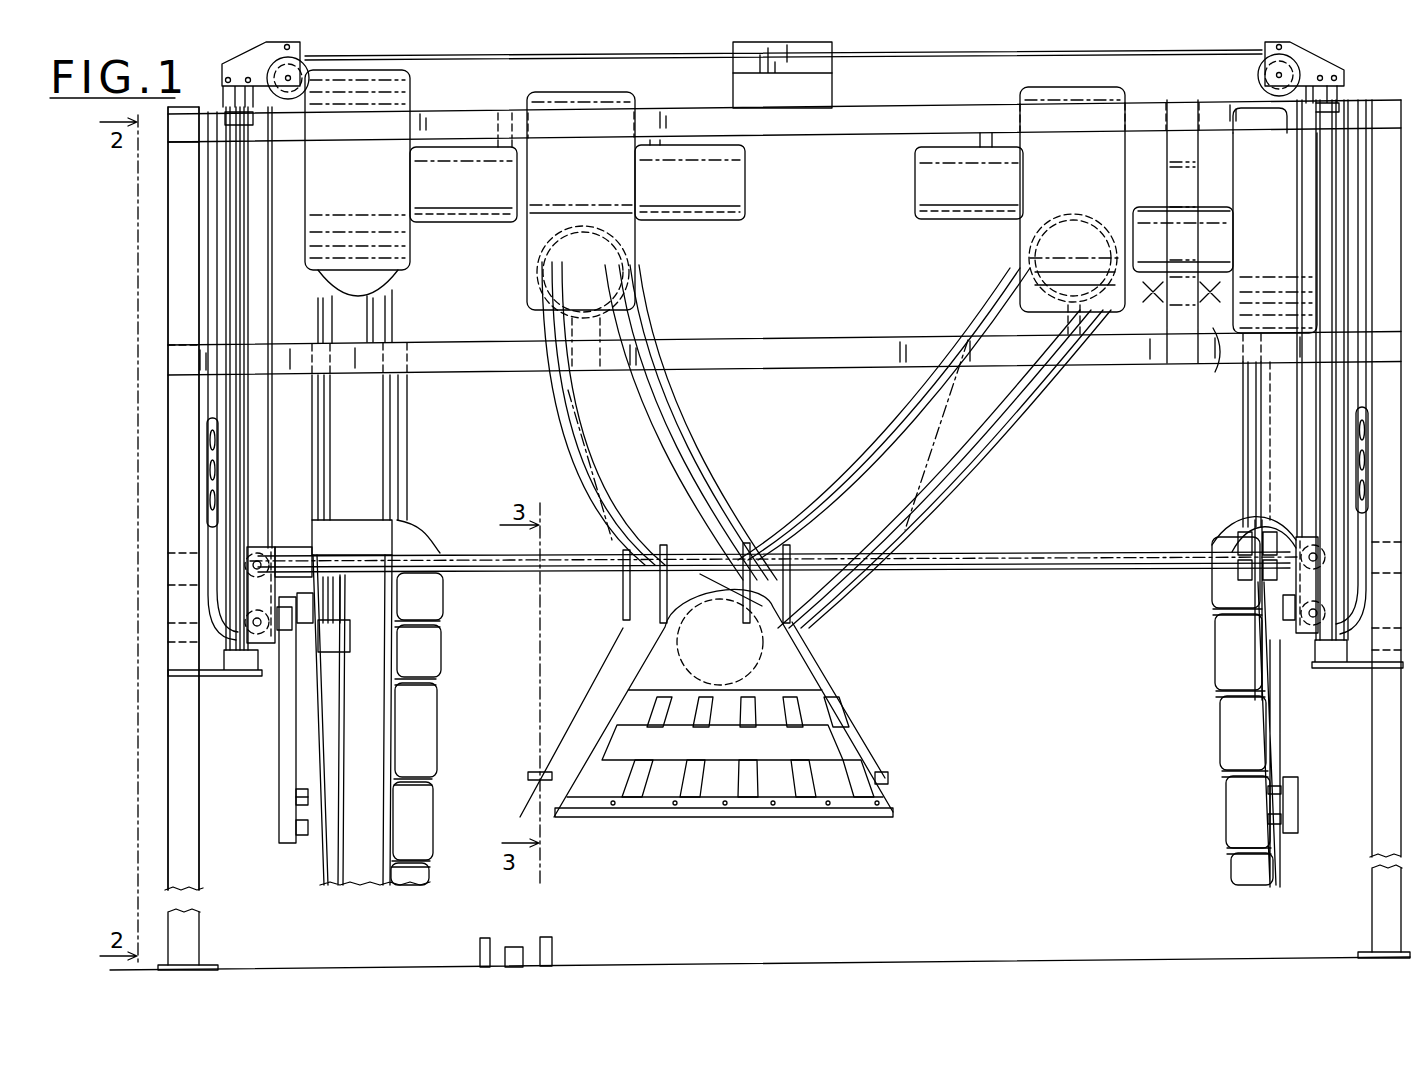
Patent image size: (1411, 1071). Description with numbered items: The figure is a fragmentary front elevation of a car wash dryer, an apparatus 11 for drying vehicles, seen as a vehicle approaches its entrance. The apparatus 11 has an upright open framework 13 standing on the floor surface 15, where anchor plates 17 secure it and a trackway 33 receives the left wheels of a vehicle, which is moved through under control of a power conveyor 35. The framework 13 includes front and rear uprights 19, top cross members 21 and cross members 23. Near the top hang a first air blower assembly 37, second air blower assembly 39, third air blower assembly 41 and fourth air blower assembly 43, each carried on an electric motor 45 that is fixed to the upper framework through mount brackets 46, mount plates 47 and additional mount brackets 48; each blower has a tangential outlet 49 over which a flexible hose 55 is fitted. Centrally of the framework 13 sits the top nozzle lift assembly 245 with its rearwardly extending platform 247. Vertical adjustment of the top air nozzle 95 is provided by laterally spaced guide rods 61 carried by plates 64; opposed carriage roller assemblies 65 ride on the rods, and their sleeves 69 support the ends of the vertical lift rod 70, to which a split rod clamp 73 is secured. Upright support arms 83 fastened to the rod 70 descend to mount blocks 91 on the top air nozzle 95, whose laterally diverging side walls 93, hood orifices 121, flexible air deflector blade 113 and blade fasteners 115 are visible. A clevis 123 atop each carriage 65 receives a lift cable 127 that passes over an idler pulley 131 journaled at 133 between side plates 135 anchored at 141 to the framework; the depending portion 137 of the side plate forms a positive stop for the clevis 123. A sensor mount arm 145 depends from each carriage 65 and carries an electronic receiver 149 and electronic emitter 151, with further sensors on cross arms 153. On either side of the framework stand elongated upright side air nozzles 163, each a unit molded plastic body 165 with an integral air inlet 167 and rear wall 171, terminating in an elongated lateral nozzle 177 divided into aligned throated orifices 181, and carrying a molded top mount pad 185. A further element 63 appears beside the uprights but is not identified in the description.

The apparatus for drying vehicles 11 is at (145, 404).
The upright open framework 13 is at (210, 839).
The floor surface 15 is at (347, 968).
The anchor plates 17 is at (205, 965).
The front and rear uprights 19 is at (193, 862).
The top cross members 21 is at (858, 124).
The cross members 23 is at (838, 334).
The trackway 33 is at (553, 948).
The power conveyor 35 is at (514, 945).
The first air blower assembly 37 is at (397, 257).
The second air blower assembly 39 is at (525, 297).
The third air blower assembly 41 is at (1016, 257).
The fourth air blower assembly 43 is at (1233, 178).
The electric motors 45 is at (478, 217).
The mount brackets 46 is at (545, 325).
The mount plates 47 is at (487, 143).
The additional mount brackets 48 is at (1193, 251).
The tangential outlet 49 is at (622, 245).
The flexible hoses 55 is at (567, 440).
The guide rods 61 is at (237, 452).
The guide tube 63 is at (253, 120).
The plates 64 is at (232, 672).
The carriage roller assemblies 65 is at (272, 558).
The sleeves 69 is at (1290, 585).
The vertical lift rod 70 is at (1095, 570).
The split rod clamp 73 is at (1242, 575).
The upright support arms 83 is at (640, 552).
The mount blocks 91 is at (762, 606).
The laterally diverging side walls 93 is at (827, 683).
The top air nozzle 95 is at (828, 670).
The flexible air deflector blade 113 is at (890, 817).
The fasteners 115 is at (675, 806).
The orifices 121 is at (522, 772).
The clevis 123 is at (1262, 520).
The lift cable 127 is at (447, 57).
The idler pulleys 131 is at (310, 63).
The pulley journal 133 is at (1260, 74).
The side plates 135 is at (272, 44).
The depending portion 137 is at (1260, 120).
The anchor 141 is at (1323, 81).
The sensor mount arm 145 is at (280, 722).
The electronic receiver 149 is at (1268, 790).
The electronic emitter 151 is at (300, 790).
The cross arms 153 is at (296, 798).
The side air nozzles 163 is at (450, 752).
The unit molded plastic body 165 is at (432, 830).
The air inlet 167 is at (408, 527).
The rear wall 171 is at (1235, 534).
The elongated lateral nozzle 177 is at (424, 603).
The throated orifices 181 is at (432, 690).
The top mount pad 185 is at (350, 630).
The top nozzle lift assembly 245 is at (722, 86).
The platform 247 is at (832, 84).